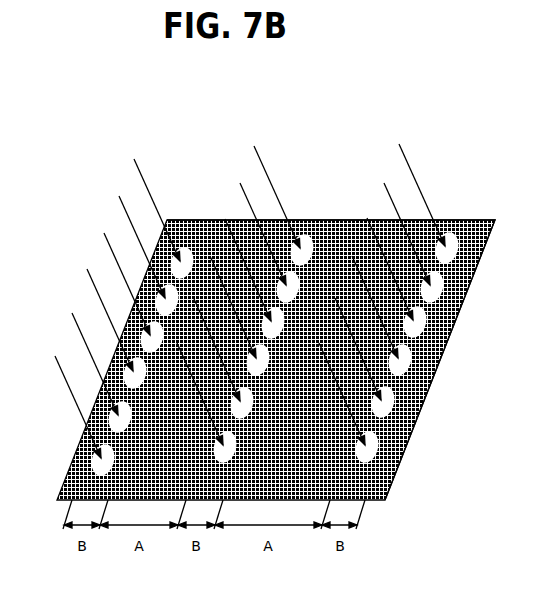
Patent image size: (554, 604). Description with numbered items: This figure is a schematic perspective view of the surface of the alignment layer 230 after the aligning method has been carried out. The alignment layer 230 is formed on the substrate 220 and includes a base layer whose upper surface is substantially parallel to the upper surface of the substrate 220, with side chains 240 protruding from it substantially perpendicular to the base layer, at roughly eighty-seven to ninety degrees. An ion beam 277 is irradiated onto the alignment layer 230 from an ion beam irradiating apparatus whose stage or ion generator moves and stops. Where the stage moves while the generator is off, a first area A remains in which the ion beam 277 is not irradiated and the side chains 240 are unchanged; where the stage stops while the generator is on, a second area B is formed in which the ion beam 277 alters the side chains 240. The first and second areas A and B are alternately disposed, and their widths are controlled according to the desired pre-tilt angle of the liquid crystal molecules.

The substrate 220 is at (354, 210).
The alignment layer 230 is at (462, 220).
The side chains 240 is at (275, 354).
The ion beam 277 is at (252, 158).